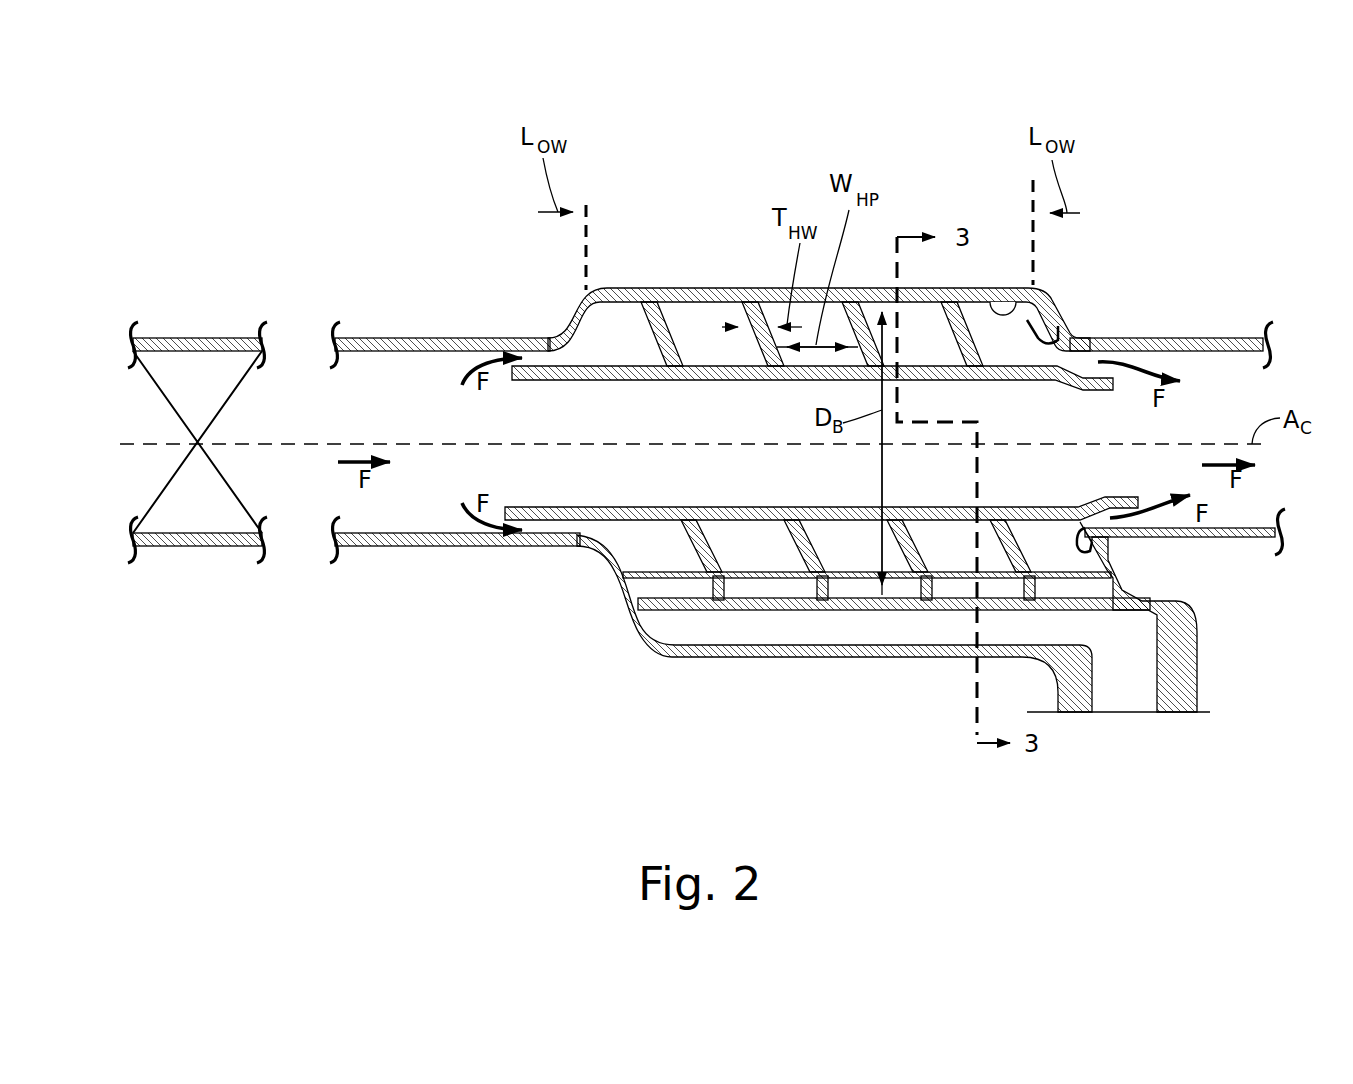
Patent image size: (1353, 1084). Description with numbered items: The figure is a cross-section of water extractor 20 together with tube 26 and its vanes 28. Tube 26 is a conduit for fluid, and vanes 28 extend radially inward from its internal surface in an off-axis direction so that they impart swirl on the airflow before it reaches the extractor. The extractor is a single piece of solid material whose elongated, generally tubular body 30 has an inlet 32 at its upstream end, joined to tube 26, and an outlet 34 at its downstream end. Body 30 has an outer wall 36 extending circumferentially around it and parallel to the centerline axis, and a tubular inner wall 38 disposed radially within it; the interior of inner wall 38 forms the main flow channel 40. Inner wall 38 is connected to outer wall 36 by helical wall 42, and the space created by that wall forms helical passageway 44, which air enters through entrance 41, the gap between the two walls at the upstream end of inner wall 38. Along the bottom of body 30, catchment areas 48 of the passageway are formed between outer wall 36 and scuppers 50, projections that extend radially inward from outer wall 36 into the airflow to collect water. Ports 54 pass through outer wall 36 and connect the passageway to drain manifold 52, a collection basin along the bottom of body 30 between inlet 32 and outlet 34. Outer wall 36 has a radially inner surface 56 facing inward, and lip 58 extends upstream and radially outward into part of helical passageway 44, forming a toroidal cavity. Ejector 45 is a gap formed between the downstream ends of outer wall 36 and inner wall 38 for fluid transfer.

The water extractor 20 is at (1088, 246).
The tube 26 is at (233, 340).
The vanes 28 is at (153, 377).
The body 30 is at (797, 260).
The inlet 32 is at (397, 340).
The outlet 34 is at (1217, 336).
The outer wall 36 is at (693, 287).
The inner wall 38 is at (700, 380).
The main flow channel 40 is at (627, 478).
The entrance 41 is at (532, 352).
The helical wall 42 is at (650, 327).
The helical passageway 44 is at (610, 342).
The ejector 45 is at (1132, 523).
The catchment areas 48 is at (777, 587).
The scuppers 50 is at (673, 571).
The drain manifold 52 is at (842, 658).
The ports 54 is at (685, 612).
The radially inner surface 56 is at (987, 302).
The lip 58 is at (1048, 326).